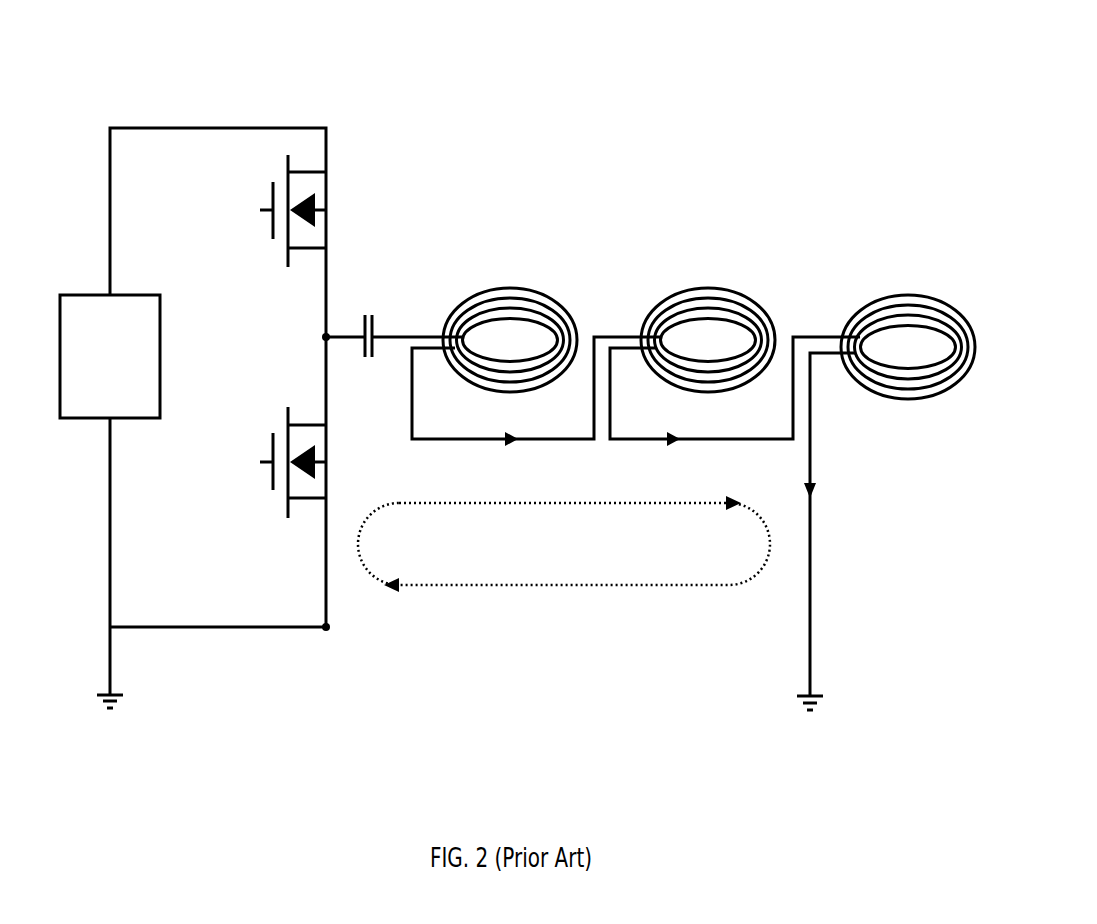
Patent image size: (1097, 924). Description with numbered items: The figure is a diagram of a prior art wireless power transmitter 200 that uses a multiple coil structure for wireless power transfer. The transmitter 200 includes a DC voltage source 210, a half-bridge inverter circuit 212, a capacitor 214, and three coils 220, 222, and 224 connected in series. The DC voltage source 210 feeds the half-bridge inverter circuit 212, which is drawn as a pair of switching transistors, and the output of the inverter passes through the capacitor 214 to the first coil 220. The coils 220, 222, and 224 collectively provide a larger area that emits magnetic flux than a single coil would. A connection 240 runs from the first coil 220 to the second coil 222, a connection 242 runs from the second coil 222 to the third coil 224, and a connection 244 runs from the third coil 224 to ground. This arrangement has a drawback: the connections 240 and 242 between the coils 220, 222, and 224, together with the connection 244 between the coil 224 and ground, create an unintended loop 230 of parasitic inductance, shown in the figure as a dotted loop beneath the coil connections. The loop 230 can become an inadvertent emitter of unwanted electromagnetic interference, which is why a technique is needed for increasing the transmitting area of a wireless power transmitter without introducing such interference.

The transmitter 200 is at (637, 103).
The DC voltage source 210 is at (100, 294).
The half-bridge inverter circuit 212 is at (244, 285).
The capacitor 214 is at (373, 328).
The coil 220 is at (522, 288).
The coil 222 is at (720, 288).
The coil 224 is at (906, 295).
The loop 230 is at (495, 621).
The connection 240 is at (530, 441).
The connection 242 is at (698, 441).
The connection 244 is at (810, 562).